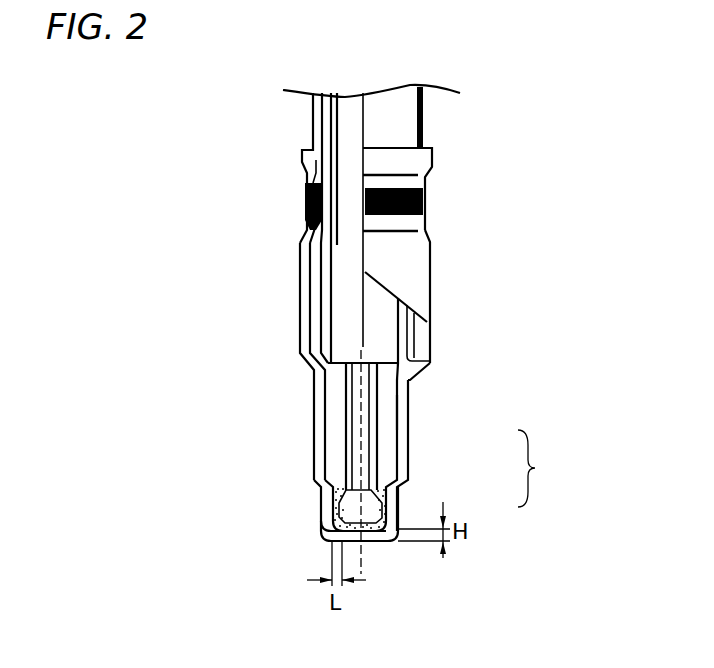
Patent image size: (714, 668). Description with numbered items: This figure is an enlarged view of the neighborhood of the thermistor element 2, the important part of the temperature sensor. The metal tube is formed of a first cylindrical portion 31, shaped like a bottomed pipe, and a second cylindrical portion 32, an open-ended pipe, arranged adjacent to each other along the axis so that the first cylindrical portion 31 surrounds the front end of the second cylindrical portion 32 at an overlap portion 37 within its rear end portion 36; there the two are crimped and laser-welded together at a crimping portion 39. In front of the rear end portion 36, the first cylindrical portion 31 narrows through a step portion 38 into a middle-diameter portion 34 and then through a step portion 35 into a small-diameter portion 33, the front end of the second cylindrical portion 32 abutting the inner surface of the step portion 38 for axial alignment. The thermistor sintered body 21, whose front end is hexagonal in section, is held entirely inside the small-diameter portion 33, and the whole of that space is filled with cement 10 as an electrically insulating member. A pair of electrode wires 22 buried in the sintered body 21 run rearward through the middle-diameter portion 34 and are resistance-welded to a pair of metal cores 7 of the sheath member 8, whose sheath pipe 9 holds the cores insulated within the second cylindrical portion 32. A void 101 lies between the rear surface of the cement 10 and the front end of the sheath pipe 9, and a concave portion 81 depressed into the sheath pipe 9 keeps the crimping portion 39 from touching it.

The thermistor element 2 is at (534, 468).
The metal cores 7 is at (347, 386).
The sheath member 8 is at (338, 128).
The sheath pipe 9 is at (343, 328).
The cement 10 is at (318, 530).
The thermistor sintered body 21 is at (368, 508).
The electrode wires 22 is at (370, 437).
The first cylindrical portion 31 is at (408, 270).
The second cylindrical portion 32 is at (398, 128).
The small-diameter portion 33 is at (328, 512).
The middle-diameter portion 34 is at (316, 418).
The step portion 35 is at (322, 478).
The rear end portion 36 is at (303, 305).
The overlap portion 37 is at (308, 291).
The step portion 38 is at (422, 372).
The crimping portion 39 is at (313, 183).
The concave portion 81 is at (313, 160).
The void 101 is at (390, 410).